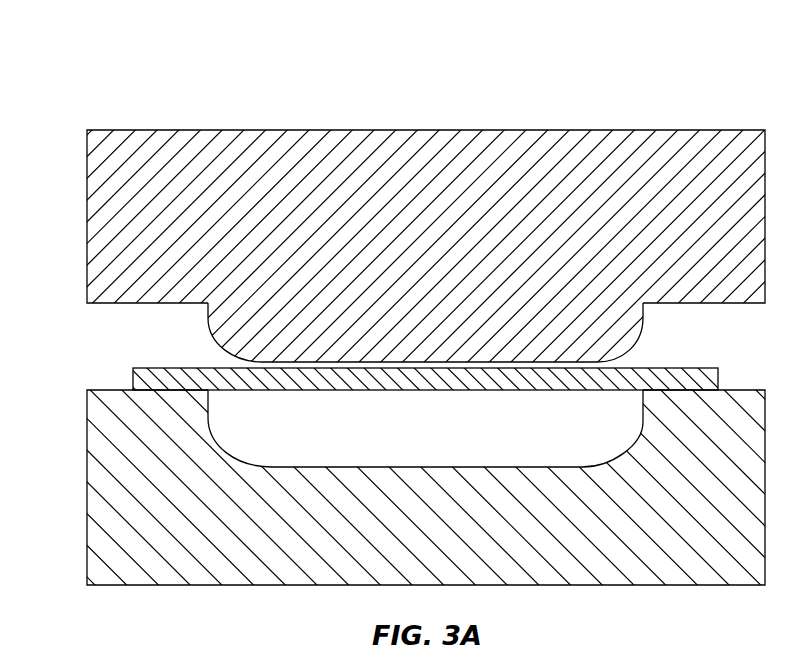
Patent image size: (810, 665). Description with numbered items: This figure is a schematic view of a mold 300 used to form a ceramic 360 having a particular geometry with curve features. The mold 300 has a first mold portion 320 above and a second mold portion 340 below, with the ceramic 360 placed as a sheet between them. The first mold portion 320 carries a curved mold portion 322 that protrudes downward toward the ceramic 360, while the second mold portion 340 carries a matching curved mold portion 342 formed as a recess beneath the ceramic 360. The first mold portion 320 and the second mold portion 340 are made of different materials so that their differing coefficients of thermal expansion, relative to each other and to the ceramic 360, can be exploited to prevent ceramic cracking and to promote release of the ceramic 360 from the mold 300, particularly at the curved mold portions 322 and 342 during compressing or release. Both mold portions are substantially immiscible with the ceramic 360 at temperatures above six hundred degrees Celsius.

The mold 300 is at (102, 78).
The first mold portion 320 is at (405, 332).
The curved mold portion 322 is at (197, 309).
The second mold portion 340 is at (405, 332).
The curved mold portion 342 is at (203, 420).
The ceramic 360 is at (133, 381).